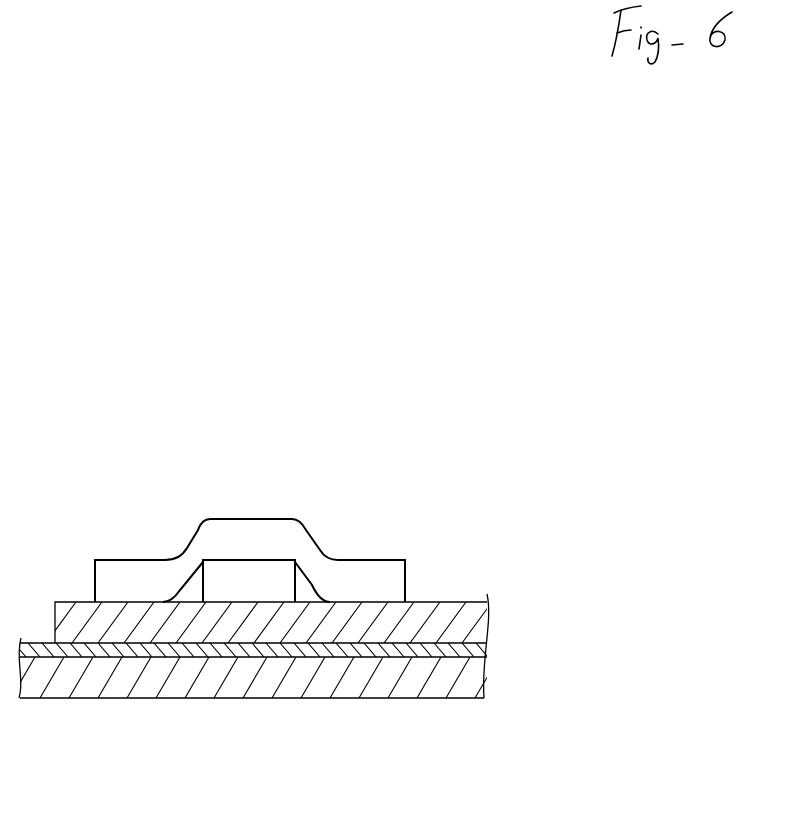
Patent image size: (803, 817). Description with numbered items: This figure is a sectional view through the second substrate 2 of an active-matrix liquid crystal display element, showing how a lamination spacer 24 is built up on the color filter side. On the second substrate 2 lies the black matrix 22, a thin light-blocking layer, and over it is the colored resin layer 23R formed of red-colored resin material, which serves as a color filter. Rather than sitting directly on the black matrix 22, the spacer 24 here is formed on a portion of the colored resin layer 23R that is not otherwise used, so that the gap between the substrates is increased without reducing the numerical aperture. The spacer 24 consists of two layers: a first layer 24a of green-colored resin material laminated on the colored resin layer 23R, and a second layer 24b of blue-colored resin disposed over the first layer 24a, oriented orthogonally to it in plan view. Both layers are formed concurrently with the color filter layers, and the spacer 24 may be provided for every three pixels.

The second substrate 2 is at (420, 687).
The black matrix 22 is at (335, 652).
The colored resin layer 23R is at (467, 618).
The spacer 24 is at (383, 485).
The first layer 24a is at (247, 572).
The second layer 24b is at (308, 553).